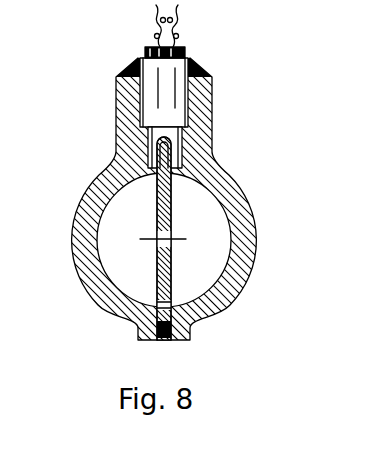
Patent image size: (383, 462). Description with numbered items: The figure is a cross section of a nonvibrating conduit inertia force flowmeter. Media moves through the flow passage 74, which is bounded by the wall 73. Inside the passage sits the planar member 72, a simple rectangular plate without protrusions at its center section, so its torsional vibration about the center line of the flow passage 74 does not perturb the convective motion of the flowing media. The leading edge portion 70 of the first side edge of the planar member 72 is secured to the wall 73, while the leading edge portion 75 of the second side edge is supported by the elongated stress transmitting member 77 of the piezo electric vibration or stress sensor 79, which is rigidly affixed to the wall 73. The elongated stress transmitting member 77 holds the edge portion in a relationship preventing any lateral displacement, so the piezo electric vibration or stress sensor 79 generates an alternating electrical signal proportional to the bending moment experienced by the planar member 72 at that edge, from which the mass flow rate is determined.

The leading edge portion of the first side edge 70 is at (198, 302).
The planar member 72 is at (95, 183).
The wall 73 is at (100, 248).
The flow passage 74 is at (197, 241).
The leading edge portion of the second side edge 75 is at (173, 172).
The elongated stress transmitting member 77 is at (117, 150).
The piezo electric vibration or stress sensor 79 is at (170, 103).